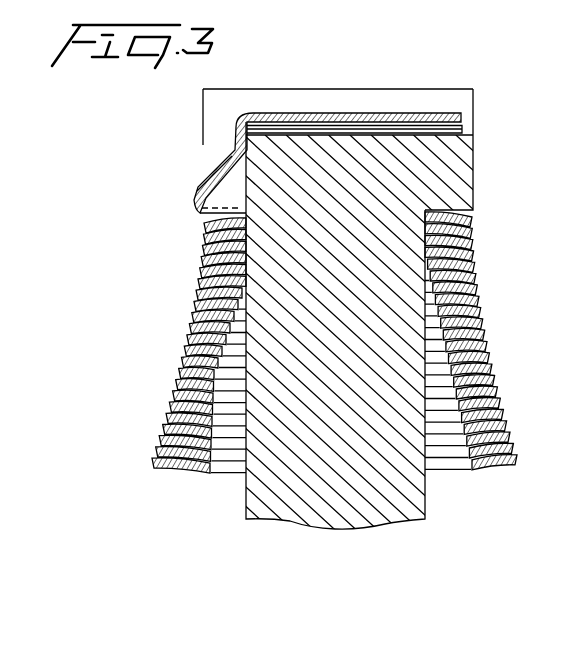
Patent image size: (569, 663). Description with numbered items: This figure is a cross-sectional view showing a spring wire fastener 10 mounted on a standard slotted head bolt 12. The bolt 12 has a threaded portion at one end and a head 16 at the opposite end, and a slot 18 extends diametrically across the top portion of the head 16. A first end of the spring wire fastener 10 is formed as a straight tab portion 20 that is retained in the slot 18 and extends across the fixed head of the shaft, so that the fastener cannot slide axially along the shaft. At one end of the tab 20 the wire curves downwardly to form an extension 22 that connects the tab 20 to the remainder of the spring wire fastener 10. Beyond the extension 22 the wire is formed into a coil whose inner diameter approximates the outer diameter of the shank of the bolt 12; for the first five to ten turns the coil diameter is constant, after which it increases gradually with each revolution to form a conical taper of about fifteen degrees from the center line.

The spring wire fastener 10 is at (487, 257).
The slotted head bolt 12 is at (407, 413).
The head 16 is at (467, 168).
The slot 18 is at (467, 103).
The straight tab portion 20 is at (365, 113).
The extension 22 is at (235, 143).